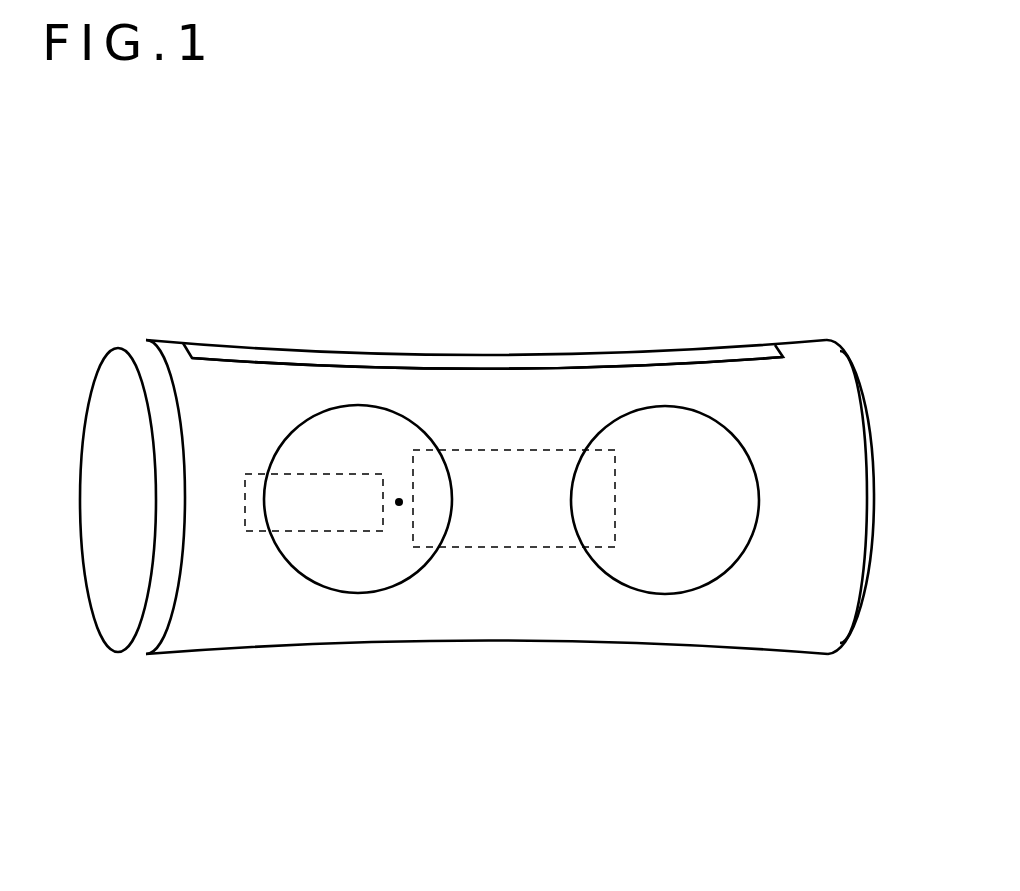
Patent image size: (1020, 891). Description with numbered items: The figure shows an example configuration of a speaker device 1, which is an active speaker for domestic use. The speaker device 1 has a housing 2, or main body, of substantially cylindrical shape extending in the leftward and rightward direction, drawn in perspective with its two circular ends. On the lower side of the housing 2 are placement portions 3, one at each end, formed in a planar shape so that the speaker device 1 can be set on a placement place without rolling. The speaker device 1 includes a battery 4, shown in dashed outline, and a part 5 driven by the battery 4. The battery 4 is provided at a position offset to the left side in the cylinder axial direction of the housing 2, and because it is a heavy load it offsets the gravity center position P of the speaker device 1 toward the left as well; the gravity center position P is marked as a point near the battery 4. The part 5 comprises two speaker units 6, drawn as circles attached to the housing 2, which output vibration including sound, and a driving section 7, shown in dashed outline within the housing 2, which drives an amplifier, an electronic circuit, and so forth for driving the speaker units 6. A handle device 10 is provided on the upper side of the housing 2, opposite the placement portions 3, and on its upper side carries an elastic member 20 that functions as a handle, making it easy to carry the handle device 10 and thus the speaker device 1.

The speaker device 1 is at (100, 218).
The housing 2 is at (494, 676).
The placement portions 3 is at (136, 658).
The battery 4 is at (245, 474).
The part 5 is at (563, 600).
The speaker units 6 is at (385, 407).
The driving section 7 is at (515, 450).
The handle device 10 is at (674, 334).
The elastic member 20 is at (727, 356).
The gravity center position P is at (399, 508).